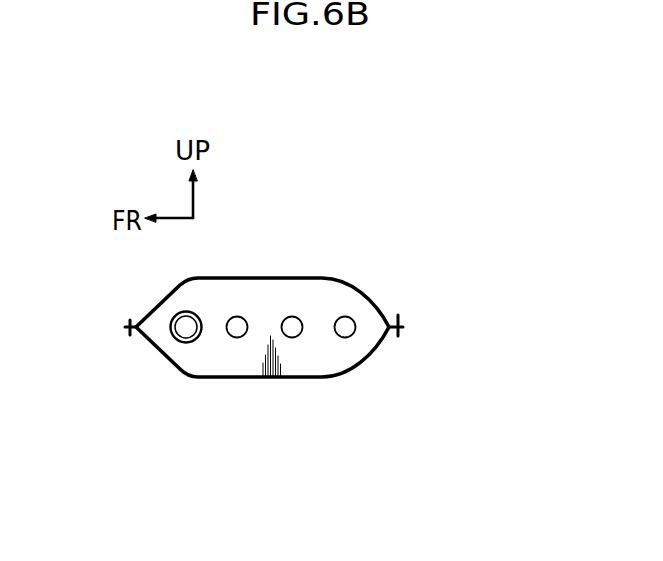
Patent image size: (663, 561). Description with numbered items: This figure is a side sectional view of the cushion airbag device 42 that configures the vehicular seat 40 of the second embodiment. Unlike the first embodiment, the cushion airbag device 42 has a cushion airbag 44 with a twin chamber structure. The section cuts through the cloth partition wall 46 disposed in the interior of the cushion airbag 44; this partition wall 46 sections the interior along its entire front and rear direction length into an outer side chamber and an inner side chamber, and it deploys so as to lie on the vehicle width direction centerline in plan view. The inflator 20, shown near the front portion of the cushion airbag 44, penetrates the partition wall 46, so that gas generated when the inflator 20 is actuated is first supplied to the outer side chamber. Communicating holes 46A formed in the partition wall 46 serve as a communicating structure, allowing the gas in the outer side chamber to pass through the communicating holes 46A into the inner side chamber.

The cushion airbag device 42 is at (382, 184).
The vehicular seat 40 is at (264, 287).
The cushion airbag 44 is at (267, 276).
The communicating holes 46A is at (237, 316).
The partition wall 46 is at (233, 352).
The inflator 20 is at (185, 330).